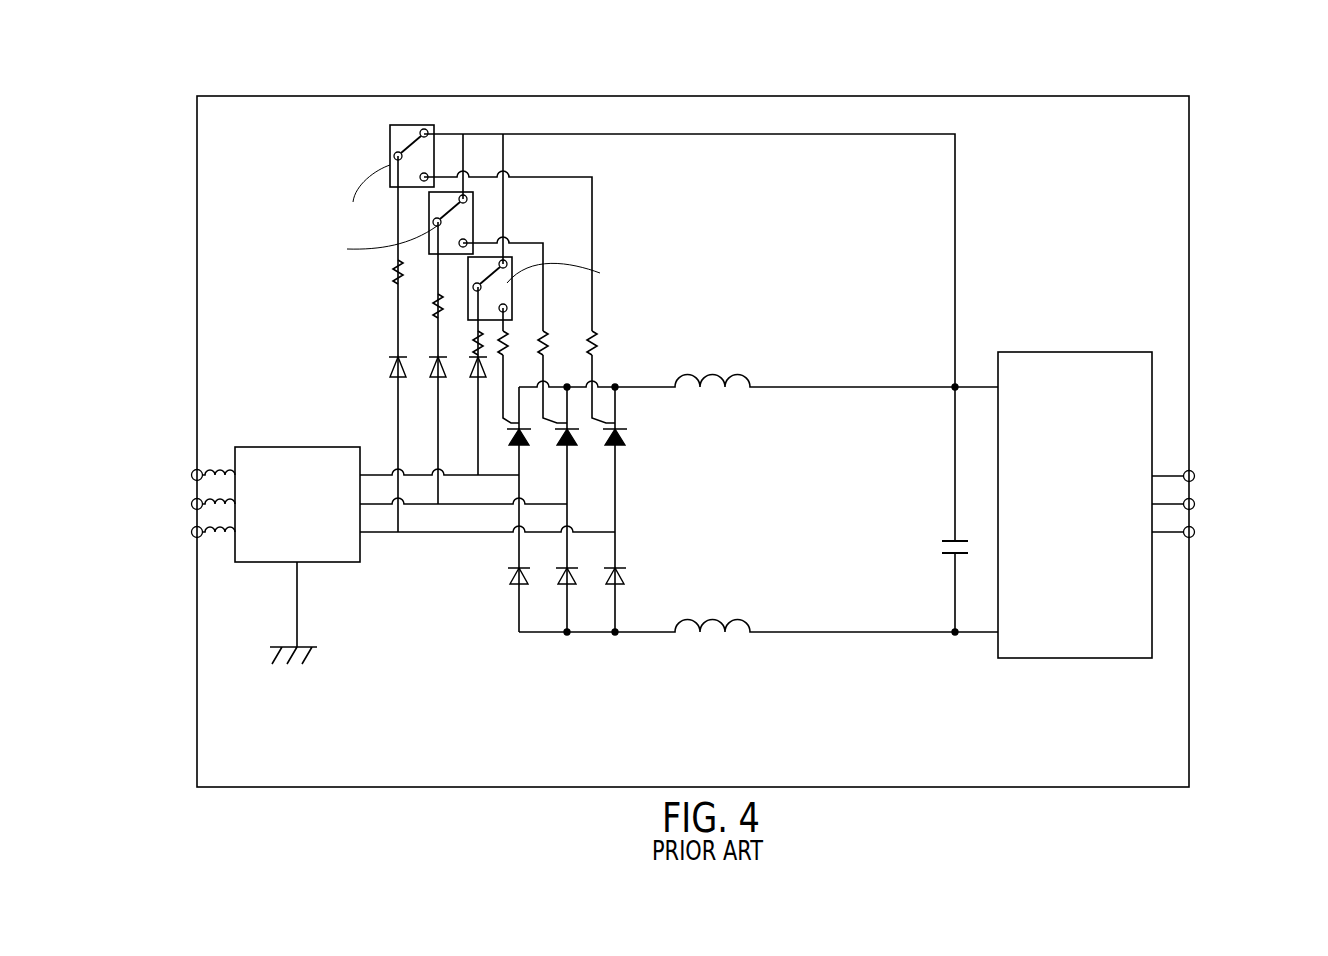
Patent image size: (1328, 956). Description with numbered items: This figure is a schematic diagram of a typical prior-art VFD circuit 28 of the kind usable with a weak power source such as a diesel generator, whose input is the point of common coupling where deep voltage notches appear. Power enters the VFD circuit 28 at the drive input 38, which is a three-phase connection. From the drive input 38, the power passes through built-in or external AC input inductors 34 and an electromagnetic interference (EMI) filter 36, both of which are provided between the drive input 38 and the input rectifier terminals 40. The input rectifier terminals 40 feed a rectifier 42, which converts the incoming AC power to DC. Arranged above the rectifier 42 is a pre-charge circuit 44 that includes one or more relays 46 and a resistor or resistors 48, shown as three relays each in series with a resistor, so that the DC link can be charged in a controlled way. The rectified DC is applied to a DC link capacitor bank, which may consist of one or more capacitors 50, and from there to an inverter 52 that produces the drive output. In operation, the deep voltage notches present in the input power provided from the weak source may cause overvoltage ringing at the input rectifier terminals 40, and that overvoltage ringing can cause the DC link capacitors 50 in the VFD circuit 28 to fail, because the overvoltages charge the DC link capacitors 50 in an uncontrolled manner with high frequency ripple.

The VFD circuit 28 is at (830, 95).
The AC input inductors 34 is at (212, 468).
The electromagnetic interference (EMI) filter 36 is at (247, 447).
The drive input 38 is at (180, 538).
The input rectifier terminals 40 is at (521, 475).
The rectifier 42 is at (634, 455).
The pre-charge circuit 44 is at (645, 120).
The relays 46 is at (390, 143).
The resistors 48 is at (475, 356).
The DC link capacitors 50 is at (968, 549).
The inverter 52 is at (1025, 352).